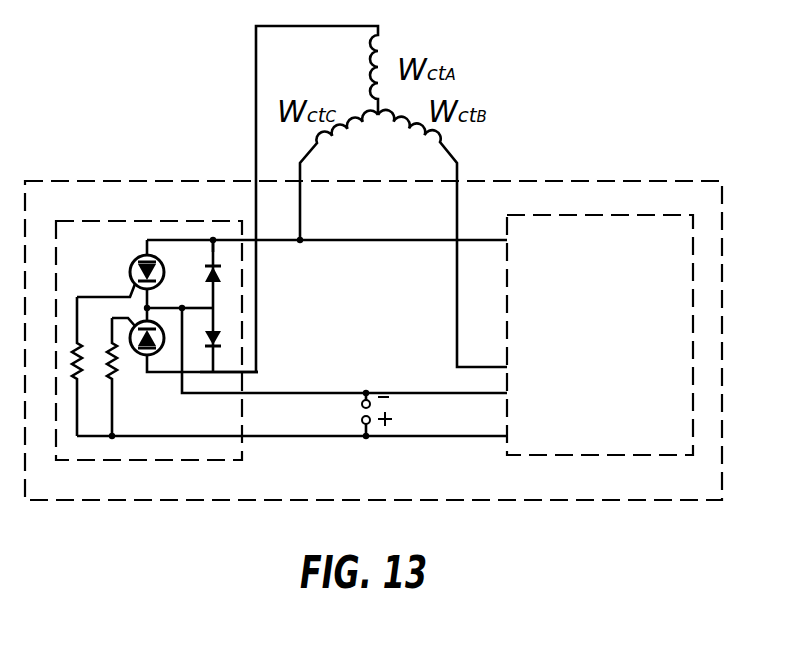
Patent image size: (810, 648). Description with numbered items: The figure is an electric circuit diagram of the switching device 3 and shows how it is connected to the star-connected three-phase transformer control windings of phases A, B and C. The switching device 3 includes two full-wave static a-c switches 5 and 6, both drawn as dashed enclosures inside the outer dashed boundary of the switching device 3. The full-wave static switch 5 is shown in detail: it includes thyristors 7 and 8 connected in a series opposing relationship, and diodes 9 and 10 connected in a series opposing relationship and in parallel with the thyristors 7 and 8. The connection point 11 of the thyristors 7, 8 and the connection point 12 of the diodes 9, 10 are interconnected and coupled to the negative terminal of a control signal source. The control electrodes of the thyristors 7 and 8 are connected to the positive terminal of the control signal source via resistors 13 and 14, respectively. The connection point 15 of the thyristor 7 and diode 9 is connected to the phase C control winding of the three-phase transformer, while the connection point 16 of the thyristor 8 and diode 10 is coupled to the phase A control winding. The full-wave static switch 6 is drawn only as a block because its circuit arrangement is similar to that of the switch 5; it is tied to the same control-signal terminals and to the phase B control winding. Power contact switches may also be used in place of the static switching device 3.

The switching device 3 is at (588, 180).
The full-wave static a-c switch 5 is at (124, 461).
The full-wave static a-c switch 6 is at (596, 456).
The thyristor 7 is at (131, 264).
The thyristor 8 is at (144, 357).
The diode 9 is at (206, 272).
The diode 10 is at (222, 338).
The connection point 11 is at (151, 307).
The connection point 12 is at (214, 308).
The resistor 13 is at (72, 371).
The resistor 14 is at (100, 377).
The connection point 15 is at (214, 240).
The connection point 16 is at (214, 373).